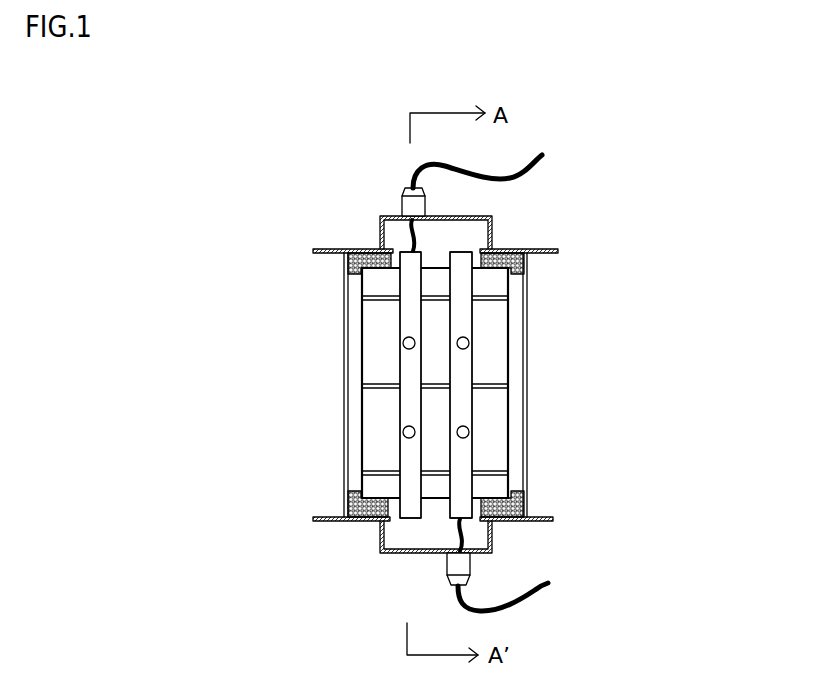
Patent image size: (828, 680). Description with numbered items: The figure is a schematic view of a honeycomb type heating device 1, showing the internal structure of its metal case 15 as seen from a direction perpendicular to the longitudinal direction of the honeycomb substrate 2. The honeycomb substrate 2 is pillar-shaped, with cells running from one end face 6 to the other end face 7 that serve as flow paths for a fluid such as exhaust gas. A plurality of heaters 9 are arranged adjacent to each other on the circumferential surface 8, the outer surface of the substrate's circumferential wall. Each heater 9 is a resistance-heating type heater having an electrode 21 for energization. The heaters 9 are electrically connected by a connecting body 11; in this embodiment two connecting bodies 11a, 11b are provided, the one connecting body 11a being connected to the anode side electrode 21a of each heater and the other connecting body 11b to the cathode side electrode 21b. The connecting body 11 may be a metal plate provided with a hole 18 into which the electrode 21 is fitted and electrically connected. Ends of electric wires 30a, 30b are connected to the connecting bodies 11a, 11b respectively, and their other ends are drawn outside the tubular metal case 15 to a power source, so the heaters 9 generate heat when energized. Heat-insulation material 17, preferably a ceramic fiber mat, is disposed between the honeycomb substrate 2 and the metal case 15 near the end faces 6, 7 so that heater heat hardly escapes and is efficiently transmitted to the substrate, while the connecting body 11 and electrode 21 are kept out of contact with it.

The honeycomb type heating device 1 is at (652, 94).
The honeycomb substrate 2 is at (346, 285).
The one end face 6 is at (345, 392).
The other end face 7 is at (527, 390).
The circumferential surface 8 is at (346, 512).
The heater 9 is at (494, 281).
The connecting body 11 is at (433, 385).
The one connecting body 11a is at (404, 317).
The other connecting body 11b is at (470, 318).
The metal case 15 is at (517, 249).
The heat-insulation material 17 is at (346, 261).
The hole 18 is at (403, 343).
The electrode 21 is at (436, 385).
The anode side electrode 21a is at (400, 346).
The cathode side electrode 21b is at (471, 348).
The electric wire 30a is at (398, 236).
The electric wire 30b is at (487, 540).